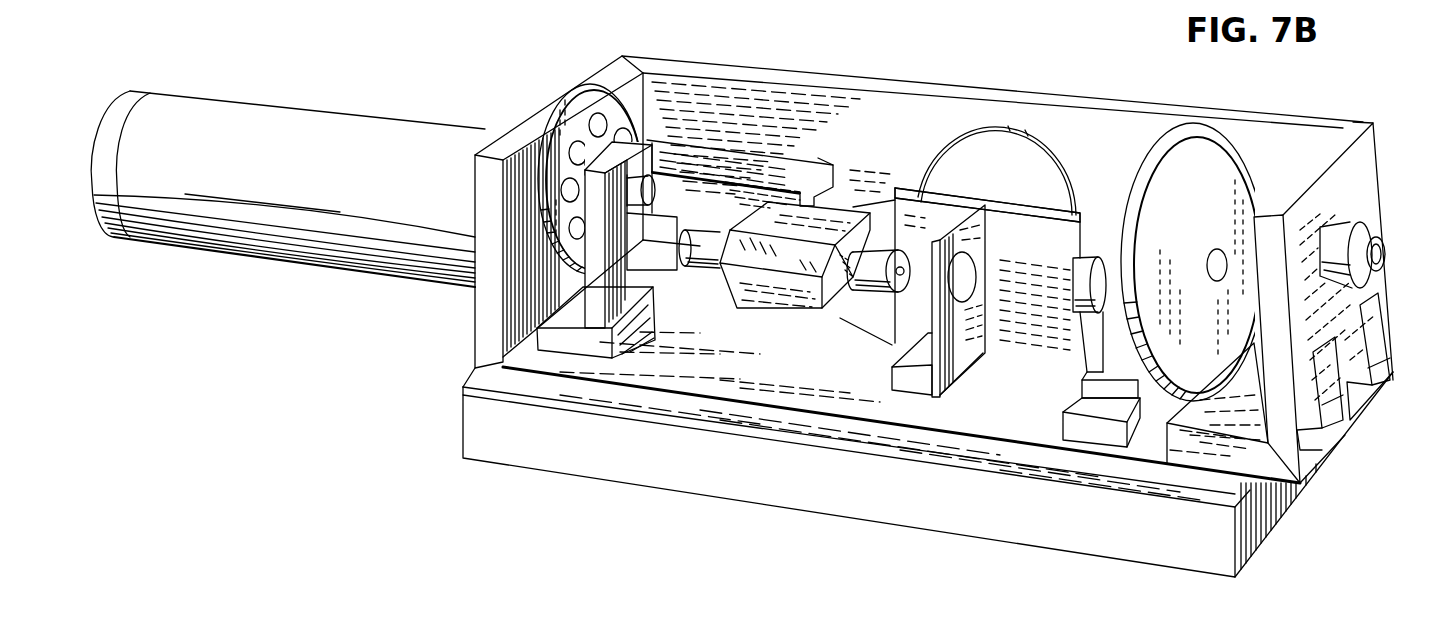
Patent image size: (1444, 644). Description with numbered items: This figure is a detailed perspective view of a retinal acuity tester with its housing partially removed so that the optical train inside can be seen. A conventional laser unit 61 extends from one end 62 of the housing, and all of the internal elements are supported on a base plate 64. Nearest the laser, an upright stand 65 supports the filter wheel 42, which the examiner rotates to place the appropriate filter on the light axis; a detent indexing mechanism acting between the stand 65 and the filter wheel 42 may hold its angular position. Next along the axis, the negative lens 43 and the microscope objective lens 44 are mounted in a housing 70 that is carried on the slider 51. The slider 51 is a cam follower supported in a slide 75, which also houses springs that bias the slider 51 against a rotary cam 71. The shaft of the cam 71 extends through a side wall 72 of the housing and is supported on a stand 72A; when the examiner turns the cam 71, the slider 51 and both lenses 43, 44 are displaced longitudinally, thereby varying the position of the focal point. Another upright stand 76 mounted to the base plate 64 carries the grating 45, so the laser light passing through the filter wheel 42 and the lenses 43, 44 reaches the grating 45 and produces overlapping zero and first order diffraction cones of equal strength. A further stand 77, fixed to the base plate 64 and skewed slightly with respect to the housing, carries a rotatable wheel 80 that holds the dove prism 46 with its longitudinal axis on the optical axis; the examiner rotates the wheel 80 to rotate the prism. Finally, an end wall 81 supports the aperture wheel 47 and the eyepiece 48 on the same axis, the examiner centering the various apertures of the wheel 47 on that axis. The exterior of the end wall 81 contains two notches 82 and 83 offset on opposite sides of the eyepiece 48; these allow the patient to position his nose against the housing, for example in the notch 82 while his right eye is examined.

The filter wheel 42 is at (577, 105).
The negative lens 43 is at (702, 240).
The microscope objective lens 44 is at (877, 263).
The grating 45 is at (958, 275).
The dove prism 46 is at (1087, 288).
The aperture wheel 47 is at (1253, 295).
The eyepiece 48 is at (1343, 236).
The slider 51 is at (880, 200).
The laser unit 61 is at (383, 137).
The end of the housing 62 is at (482, 308).
The base plate 64 is at (730, 383).
The upright stand 65 is at (637, 322).
The housing 70 is at (792, 212).
The rotary cam 71 is at (1040, 153).
The side wall 72 is at (867, 82).
The stand 72A is at (1067, 215).
The slide 75 is at (760, 167).
The upright stand 76 is at (958, 358).
The stand 77 is at (1077, 407).
The rotatable wheel 80 is at (1160, 153).
The end wall 81 is at (1373, 200).
The notch 82 is at (1327, 367).
The notch 83 is at (1377, 322).